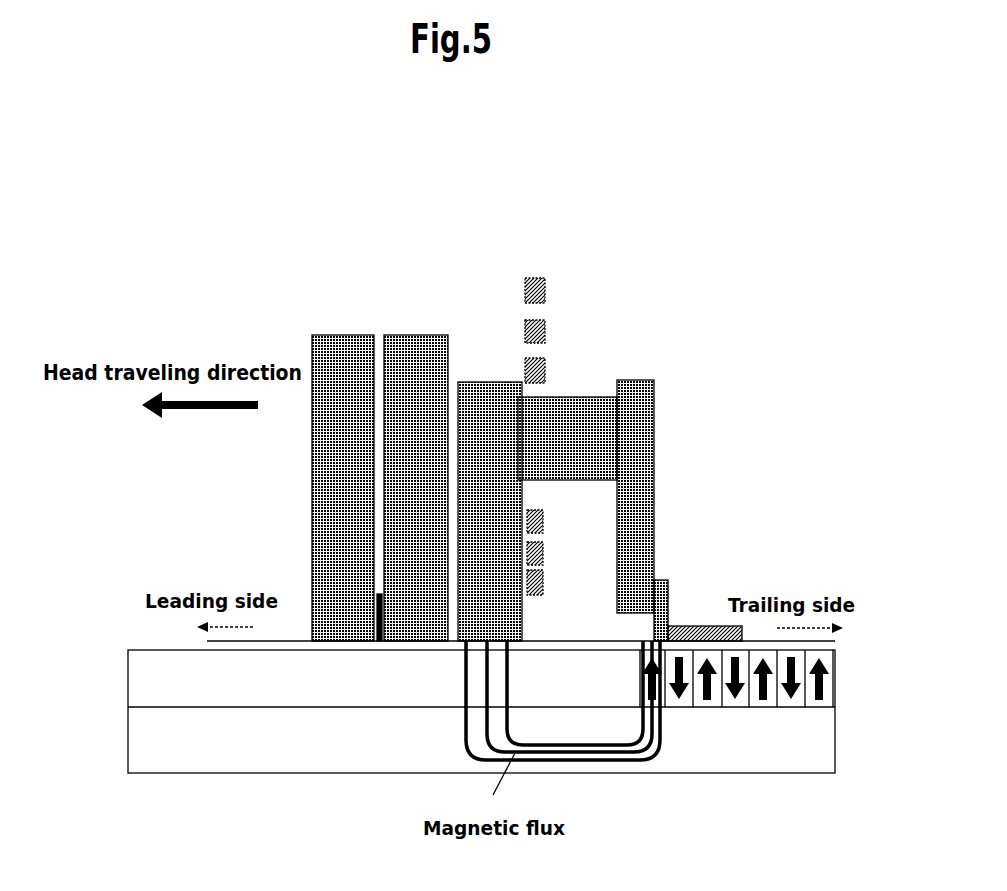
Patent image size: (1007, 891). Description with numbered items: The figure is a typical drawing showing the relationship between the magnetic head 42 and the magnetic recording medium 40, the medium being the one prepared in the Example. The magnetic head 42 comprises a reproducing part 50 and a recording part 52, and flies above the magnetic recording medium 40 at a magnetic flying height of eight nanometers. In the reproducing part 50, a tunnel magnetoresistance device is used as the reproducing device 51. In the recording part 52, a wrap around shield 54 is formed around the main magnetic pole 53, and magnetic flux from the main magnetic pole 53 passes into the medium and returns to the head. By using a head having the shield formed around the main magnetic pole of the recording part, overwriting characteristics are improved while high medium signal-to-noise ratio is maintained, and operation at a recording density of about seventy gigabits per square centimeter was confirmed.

The magnetic recording medium 40 is at (102, 647).
The magnetic head 42 is at (300, 208).
The reproducing part 50 is at (443, 265).
The reproducing device 51 is at (376, 600).
The recording part 52 is at (650, 266).
The main magnetic pole 53 is at (668, 580).
The wrap around shield 54 is at (693, 618).